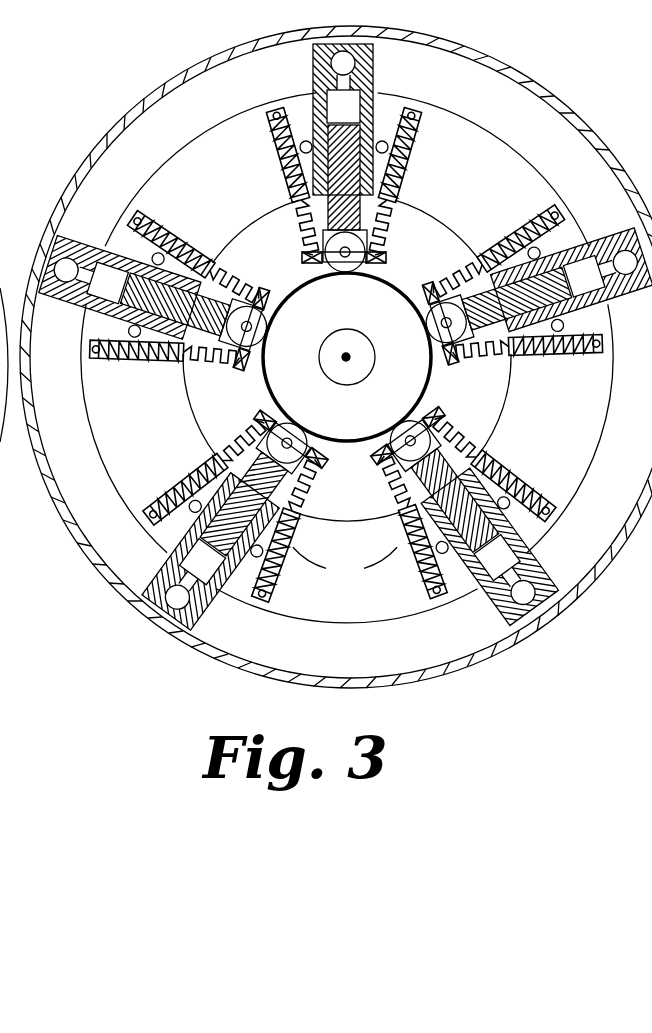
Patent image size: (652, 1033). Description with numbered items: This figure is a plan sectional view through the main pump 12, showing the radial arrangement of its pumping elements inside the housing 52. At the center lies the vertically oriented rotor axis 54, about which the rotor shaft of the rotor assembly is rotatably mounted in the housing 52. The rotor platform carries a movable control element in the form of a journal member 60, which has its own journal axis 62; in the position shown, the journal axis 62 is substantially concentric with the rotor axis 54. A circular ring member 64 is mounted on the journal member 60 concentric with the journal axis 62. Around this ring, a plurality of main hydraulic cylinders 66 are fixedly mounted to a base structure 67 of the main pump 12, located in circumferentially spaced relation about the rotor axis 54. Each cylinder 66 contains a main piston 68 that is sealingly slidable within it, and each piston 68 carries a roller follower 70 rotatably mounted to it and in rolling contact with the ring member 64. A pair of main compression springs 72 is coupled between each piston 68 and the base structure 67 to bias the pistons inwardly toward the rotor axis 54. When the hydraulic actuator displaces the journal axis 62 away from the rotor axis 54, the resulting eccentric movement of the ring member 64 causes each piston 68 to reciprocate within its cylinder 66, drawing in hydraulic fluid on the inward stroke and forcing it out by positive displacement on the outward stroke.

The main pump 12 is at (336, 370).
The housing 52 is at (160, 633).
The rotor axis 54 is at (337, 325).
The journal member 60 is at (338, 385).
The journal axis 62 is at (343, 356).
The ring member 64 is at (381, 423).
The main hydraulic cylinders 66 is at (178, 542).
The base structure 67 is at (151, 424).
The main piston 68 is at (213, 590).
The roller follower 70 is at (318, 443).
The main compression springs 72 is at (345, 567).